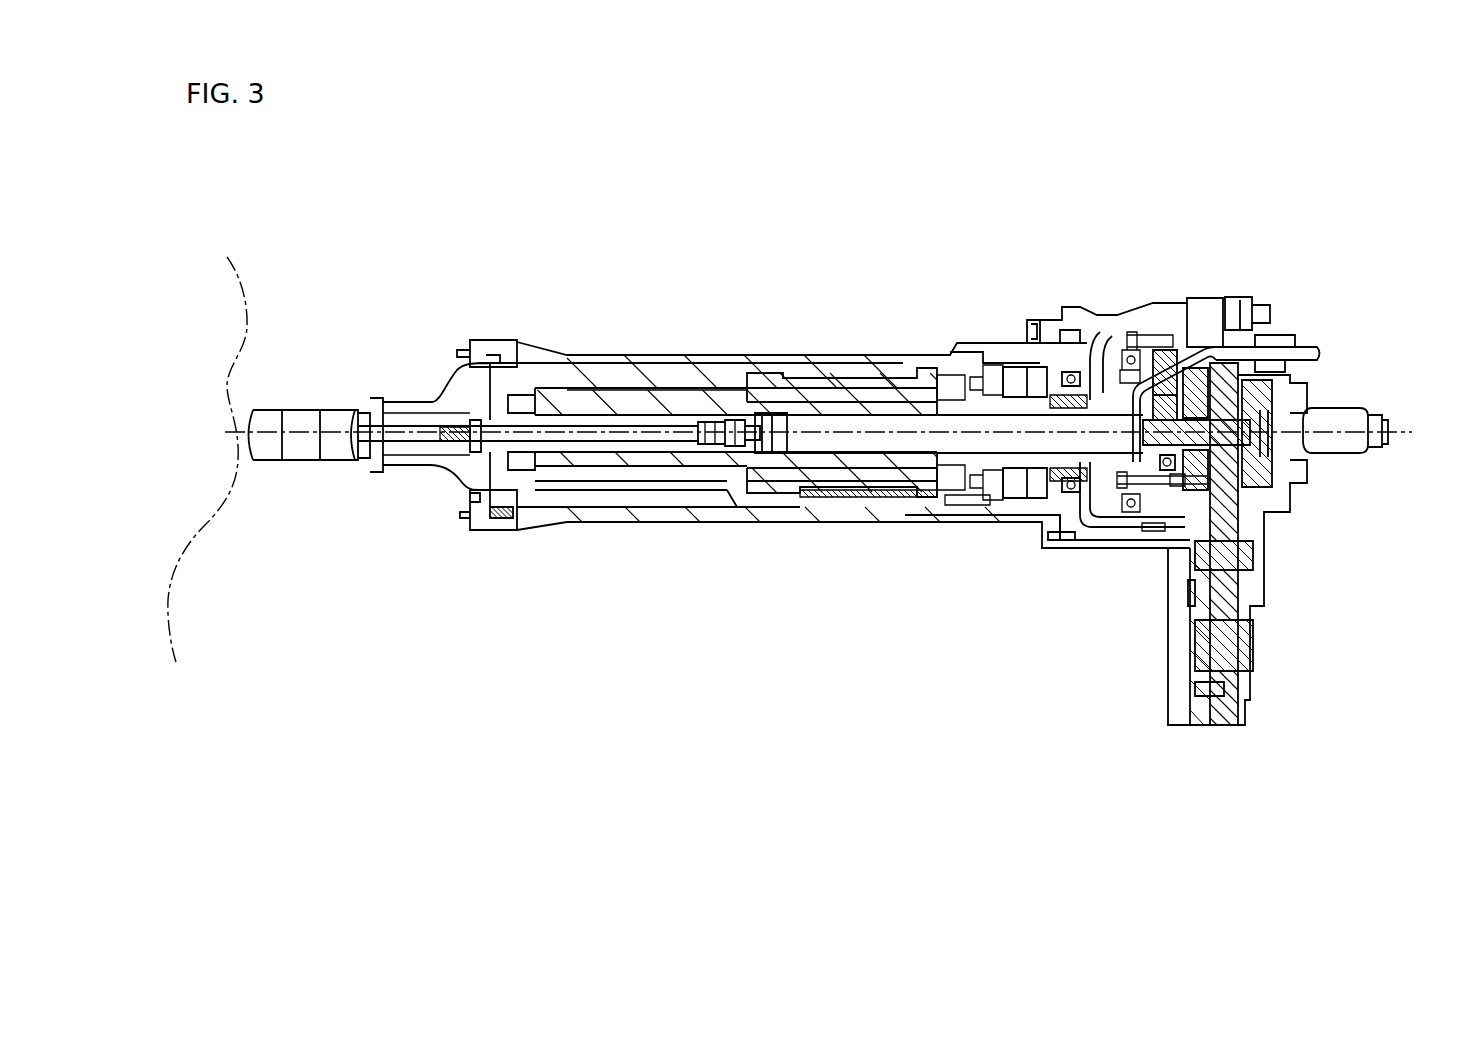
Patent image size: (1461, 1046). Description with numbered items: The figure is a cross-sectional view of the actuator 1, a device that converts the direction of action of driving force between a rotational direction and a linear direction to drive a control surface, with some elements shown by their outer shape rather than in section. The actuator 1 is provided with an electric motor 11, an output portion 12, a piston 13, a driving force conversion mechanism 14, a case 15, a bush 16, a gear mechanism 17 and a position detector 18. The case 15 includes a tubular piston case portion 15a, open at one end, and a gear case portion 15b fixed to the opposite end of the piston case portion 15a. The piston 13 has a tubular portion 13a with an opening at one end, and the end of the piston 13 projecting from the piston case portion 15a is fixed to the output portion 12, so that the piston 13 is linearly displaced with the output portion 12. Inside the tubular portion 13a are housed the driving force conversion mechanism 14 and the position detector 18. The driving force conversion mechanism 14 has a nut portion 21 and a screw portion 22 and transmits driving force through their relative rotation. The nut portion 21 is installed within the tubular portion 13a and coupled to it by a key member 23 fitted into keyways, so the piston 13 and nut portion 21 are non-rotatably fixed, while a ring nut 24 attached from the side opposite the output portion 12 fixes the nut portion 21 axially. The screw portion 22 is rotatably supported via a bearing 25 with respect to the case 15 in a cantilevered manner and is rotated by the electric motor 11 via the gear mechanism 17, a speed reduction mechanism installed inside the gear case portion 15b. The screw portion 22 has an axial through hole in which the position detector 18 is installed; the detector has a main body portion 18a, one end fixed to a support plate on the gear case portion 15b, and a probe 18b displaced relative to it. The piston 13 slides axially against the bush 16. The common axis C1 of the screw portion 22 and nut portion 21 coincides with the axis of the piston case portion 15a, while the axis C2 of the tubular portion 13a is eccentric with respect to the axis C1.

The actuator 1 is at (931, 266).
The electric motor 11 is at (1179, 722).
The output portion 12 is at (270, 451).
The piston 13 is at (453, 379).
The tubular portion 13a is at (616, 370).
The driving force conversion mechanism 14 is at (722, 573).
The case 15 is at (842, 406).
The piston case portion 15a is at (650, 358).
The gear case portion 15b is at (1200, 515).
The bush 16 is at (497, 525).
The gear mechanism 17 is at (1171, 378).
The position detector 18 is at (847, 280).
The main body portion 18a is at (895, 415).
The probe 18b is at (665, 430).
The nut portion 21 is at (772, 482).
The screw portion 22 is at (690, 458).
The key member 23 is at (860, 498).
The ring nut 24 is at (962, 505).
The bearing 25 is at (1035, 365).
The axis of the screw portion and the nut portion C1 is at (785, 567).
The axis of the tubular portion C2 is at (207, 448).